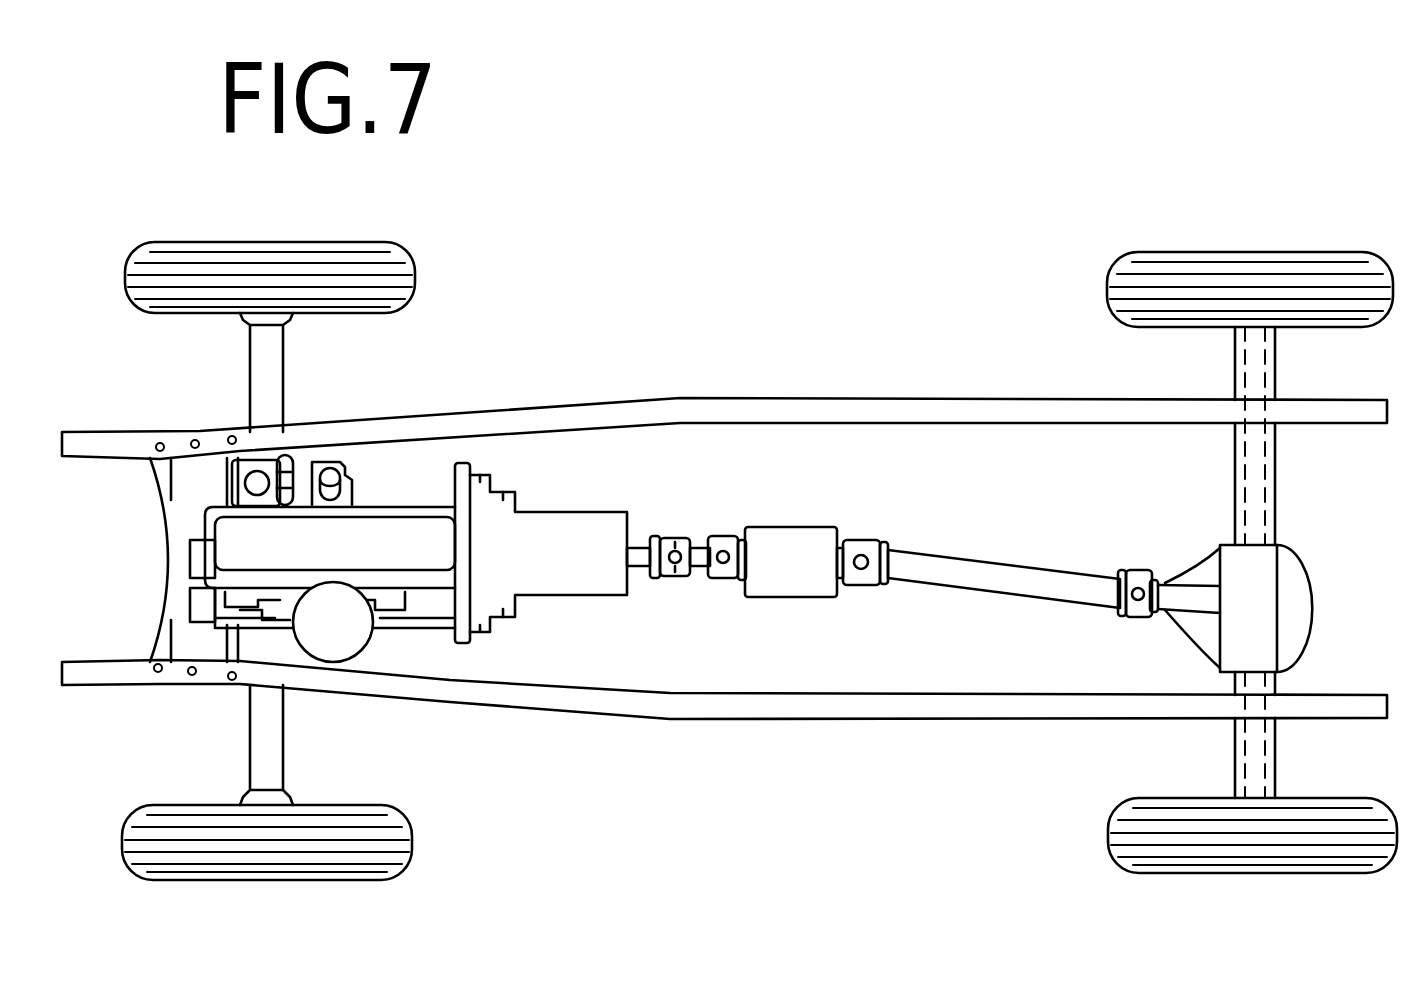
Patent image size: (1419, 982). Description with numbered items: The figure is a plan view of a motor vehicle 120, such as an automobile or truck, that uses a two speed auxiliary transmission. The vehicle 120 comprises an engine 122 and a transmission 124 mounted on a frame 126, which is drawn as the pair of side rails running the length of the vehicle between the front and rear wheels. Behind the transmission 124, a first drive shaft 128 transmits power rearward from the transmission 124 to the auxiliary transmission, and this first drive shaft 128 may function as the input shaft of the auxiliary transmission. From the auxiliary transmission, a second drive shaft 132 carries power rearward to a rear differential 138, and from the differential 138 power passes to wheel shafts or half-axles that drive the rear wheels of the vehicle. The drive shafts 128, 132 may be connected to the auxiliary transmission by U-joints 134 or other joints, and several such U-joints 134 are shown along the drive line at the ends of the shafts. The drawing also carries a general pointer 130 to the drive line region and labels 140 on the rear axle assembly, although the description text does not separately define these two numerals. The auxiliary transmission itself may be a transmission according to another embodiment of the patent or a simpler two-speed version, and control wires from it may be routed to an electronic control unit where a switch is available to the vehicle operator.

The motor vehicle 120 is at (855, 204).
The engine 122 is at (233, 545).
The transmission 124 is at (567, 543).
The frame 126 is at (887, 712).
The first drive shaft 128 is at (695, 562).
The drive line 130 is at (732, 468).
The second drive shaft 132 is at (1027, 575).
The U-joints 134 is at (725, 530).
The rear differential 138 is at (1295, 622).
The rear axle 140 is at (1263, 437).